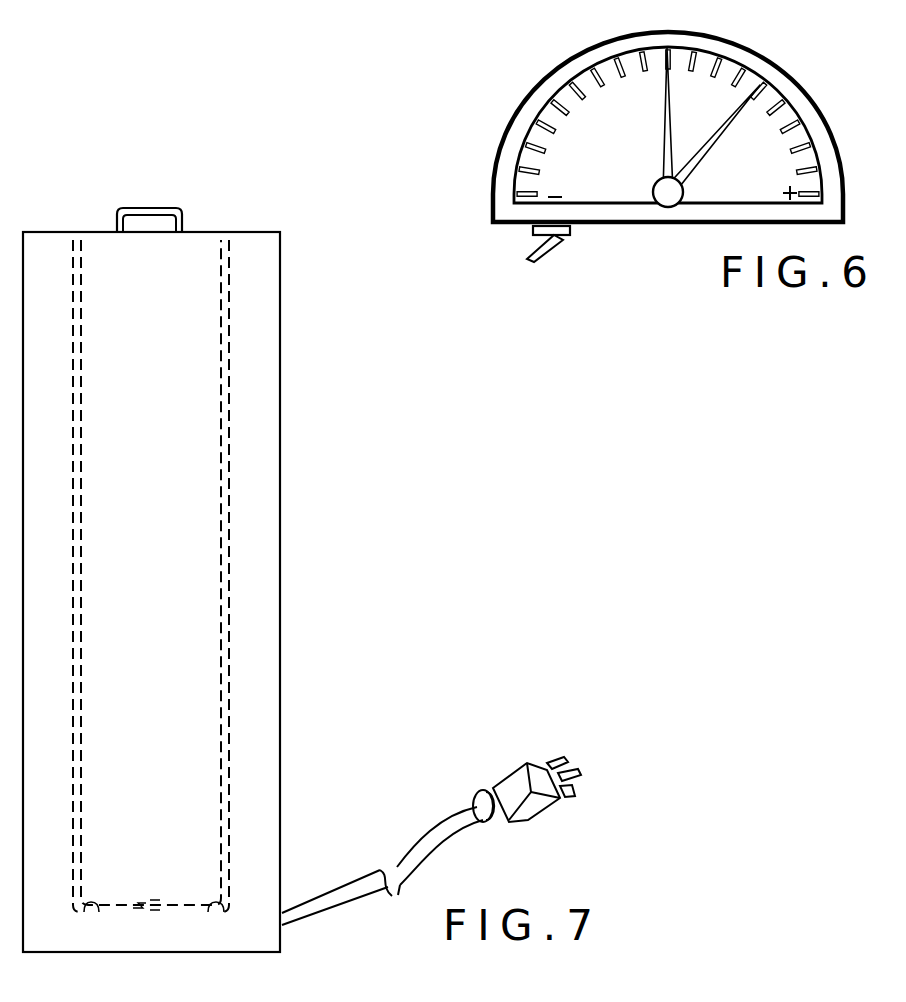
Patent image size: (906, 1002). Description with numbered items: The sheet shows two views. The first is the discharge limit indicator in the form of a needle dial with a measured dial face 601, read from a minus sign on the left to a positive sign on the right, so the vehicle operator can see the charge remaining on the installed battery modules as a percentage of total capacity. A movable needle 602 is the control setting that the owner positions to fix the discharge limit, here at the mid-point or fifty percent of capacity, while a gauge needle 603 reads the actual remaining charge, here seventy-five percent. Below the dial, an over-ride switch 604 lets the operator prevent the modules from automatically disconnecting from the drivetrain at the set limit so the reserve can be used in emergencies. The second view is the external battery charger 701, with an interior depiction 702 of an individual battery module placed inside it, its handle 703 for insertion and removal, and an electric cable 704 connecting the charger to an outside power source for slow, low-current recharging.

In FIG. 6, the measured dial face 601 is at (610, 72).
In FIG. 6, the movable needle 602 is at (663, 128).
In FIG. 6, the gauge needle 603 is at (722, 125).
In FIG. 6, the over-ride switch 604 is at (530, 241).
In FIG. 7, the external battery charger 701 is at (270, 595).
In FIG. 7, the battery module placement 702 is at (246, 380).
In FIG. 7, the handle 703 is at (147, 210).
In FIG. 7, the electric cable 704 is at (457, 817).